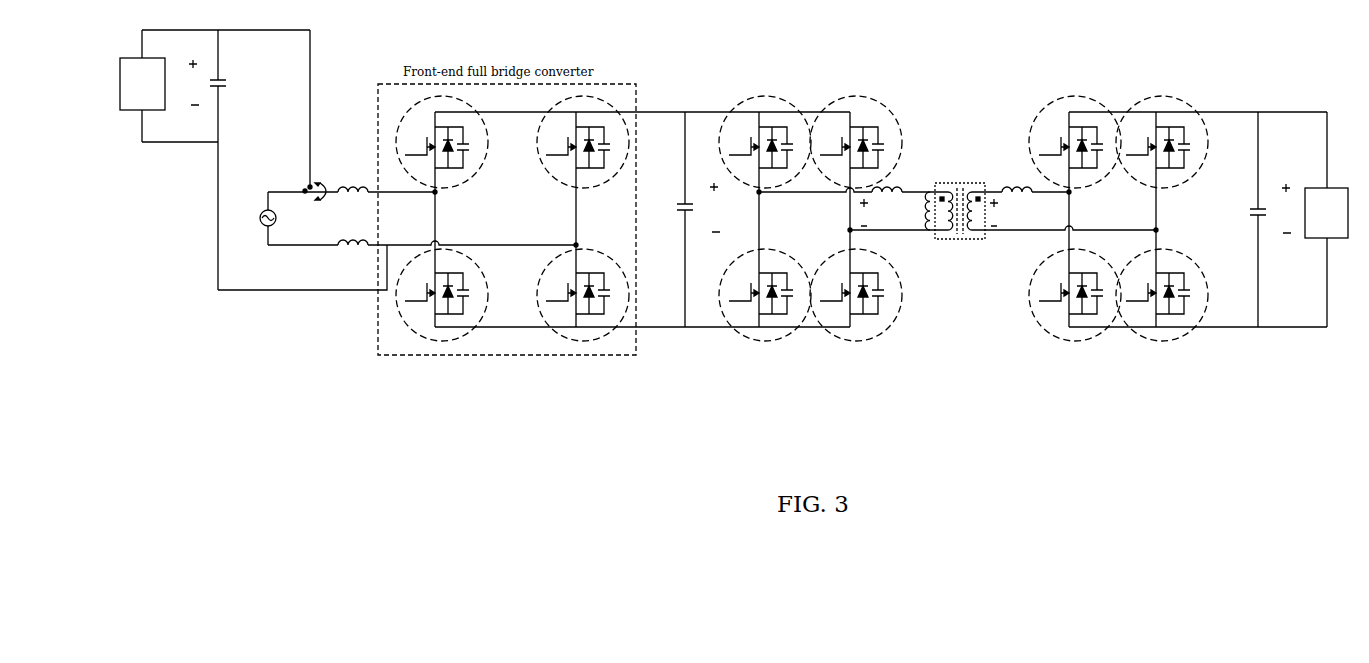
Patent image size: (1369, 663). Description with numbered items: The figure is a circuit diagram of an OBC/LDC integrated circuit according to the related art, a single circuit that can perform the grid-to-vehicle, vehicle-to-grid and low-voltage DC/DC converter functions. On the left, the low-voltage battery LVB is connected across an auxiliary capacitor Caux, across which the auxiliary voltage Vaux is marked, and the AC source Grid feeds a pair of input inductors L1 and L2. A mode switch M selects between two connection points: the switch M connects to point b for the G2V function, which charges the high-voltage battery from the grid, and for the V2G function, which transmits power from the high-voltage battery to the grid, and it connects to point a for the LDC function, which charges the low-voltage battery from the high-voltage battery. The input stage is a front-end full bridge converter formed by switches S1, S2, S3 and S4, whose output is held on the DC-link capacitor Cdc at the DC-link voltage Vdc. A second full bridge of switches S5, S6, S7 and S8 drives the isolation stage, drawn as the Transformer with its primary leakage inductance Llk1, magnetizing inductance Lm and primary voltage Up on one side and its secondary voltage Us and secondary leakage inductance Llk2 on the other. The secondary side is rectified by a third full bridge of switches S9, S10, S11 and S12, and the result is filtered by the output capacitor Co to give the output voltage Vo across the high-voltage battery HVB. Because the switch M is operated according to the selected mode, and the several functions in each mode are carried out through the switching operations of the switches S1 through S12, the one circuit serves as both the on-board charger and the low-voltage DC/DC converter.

The low-voltage battery LVB is at (215, 108).
The auxiliary capacitor Caux is at (235, 160).
The auxiliary voltage Vaux is at (189, 82).
The grid Grid is at (282, 218).
The switch position a is at (301, 179).
The switch position b is at (302, 199).
The switch M is at (325, 203).
The first inductor L1 is at (386, 181).
The second inductor L2 is at (457, 235).
The switch S1 is at (442, 142).
The switch S2 is at (442, 295).
The switch S3 is at (583, 142).
The switch S4 is at (583, 295).
The DC link capacitor Cdc is at (670, 219).
The DC link voltage Vdc is at (714, 207).
The switch S5 is at (765, 142).
The switch S6 is at (765, 295).
The switch S7 is at (856, 142).
The switch S8 is at (856, 295).
The primary leakage inductance Llk1 is at (853, 183).
The magnetizing inductance Lm is at (914, 211).
The primary voltage Up is at (867, 213).
The isolation transformer Transformer is at (1003, 202).
The secondary voltage Us is at (998, 212).
The secondary leakage inductance Llk2 is at (1035, 183).
The switch S9 is at (1075, 142).
The switch S10 is at (1075, 295).
The switch S11 is at (1162, 142).
The switch S12 is at (1162, 295).
The output capacitor Co is at (1242, 219).
The output voltage Vo is at (1284, 208).
The high-voltage battery HVB is at (1326, 219).